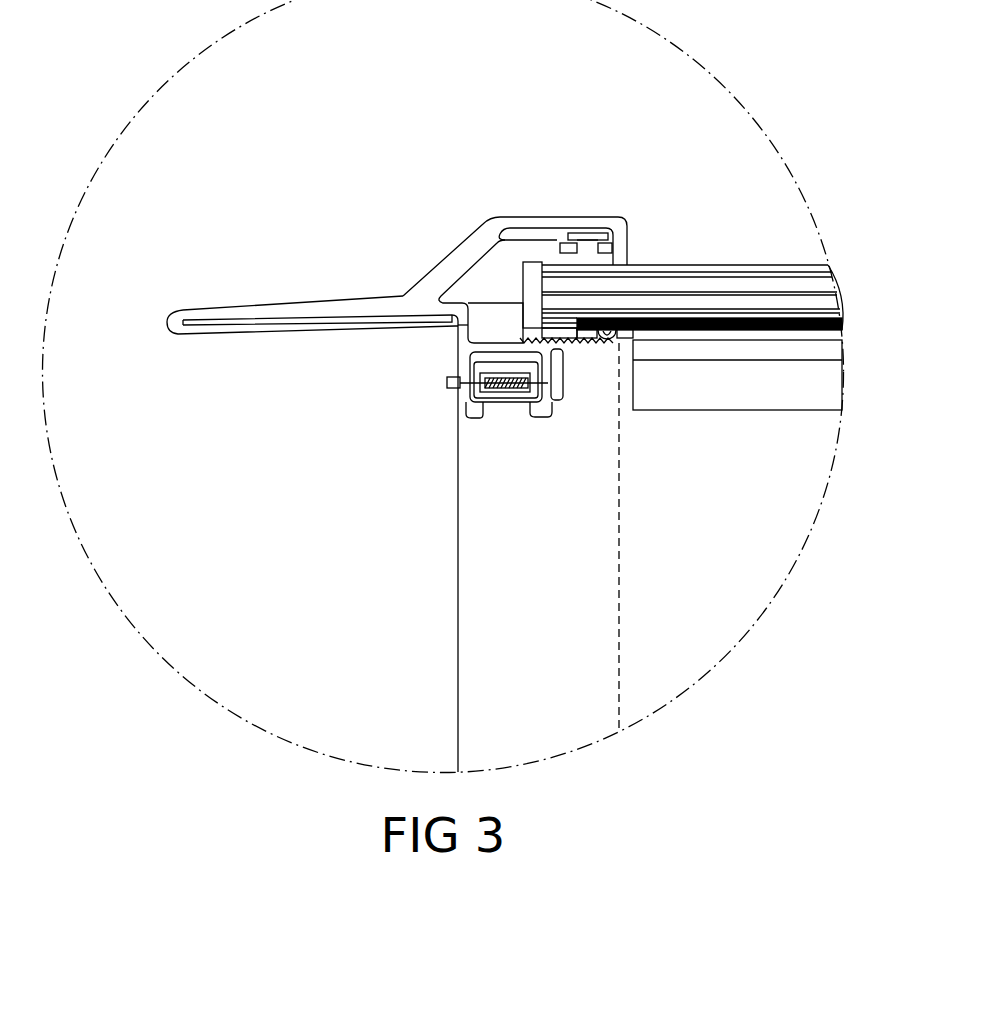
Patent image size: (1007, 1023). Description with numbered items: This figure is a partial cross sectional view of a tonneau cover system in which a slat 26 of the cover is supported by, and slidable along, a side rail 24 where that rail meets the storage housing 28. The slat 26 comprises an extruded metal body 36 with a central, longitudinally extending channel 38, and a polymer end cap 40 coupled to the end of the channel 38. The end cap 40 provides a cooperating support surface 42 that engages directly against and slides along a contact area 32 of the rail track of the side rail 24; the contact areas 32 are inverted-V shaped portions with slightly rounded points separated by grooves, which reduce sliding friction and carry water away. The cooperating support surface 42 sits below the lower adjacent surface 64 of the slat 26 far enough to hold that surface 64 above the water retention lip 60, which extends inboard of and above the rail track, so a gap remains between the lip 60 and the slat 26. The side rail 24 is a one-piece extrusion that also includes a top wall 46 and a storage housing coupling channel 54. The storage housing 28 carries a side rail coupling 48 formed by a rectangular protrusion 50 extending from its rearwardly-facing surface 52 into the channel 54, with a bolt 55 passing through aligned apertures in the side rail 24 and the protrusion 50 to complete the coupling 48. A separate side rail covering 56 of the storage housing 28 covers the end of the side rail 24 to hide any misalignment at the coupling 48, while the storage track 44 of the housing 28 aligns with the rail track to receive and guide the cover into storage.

The side rail 24 is at (420, 357).
The slat 26 is at (787, 265).
The storage housing 28 is at (775, 482).
The contact area 32 is at (557, 345).
The extruded metal body 36 is at (700, 285).
The channel 38 is at (818, 284).
The end cap 40 is at (534, 262).
The cooperating support surface 42 is at (552, 402).
The storage track 44 is at (619, 537).
The top wall 46 is at (523, 232).
The side rail coupling 48 is at (478, 412).
The rectangular protrusion 50 is at (513, 392).
The rearwardly-facing surface 52 is at (653, 458).
The channel 54 is at (467, 357).
The bolt 55 is at (453, 390).
The side rail covering 56 is at (487, 227).
The water retention lip 60 is at (612, 322).
The lower adjacent surface 64 is at (813, 330).